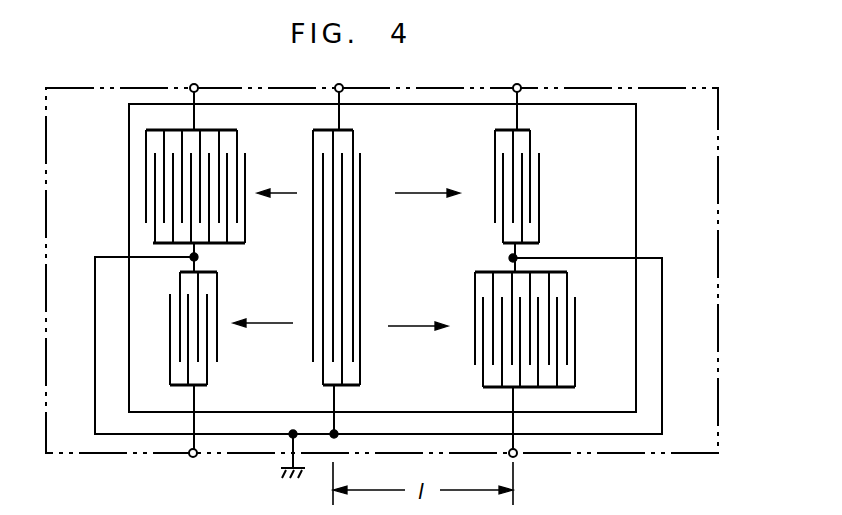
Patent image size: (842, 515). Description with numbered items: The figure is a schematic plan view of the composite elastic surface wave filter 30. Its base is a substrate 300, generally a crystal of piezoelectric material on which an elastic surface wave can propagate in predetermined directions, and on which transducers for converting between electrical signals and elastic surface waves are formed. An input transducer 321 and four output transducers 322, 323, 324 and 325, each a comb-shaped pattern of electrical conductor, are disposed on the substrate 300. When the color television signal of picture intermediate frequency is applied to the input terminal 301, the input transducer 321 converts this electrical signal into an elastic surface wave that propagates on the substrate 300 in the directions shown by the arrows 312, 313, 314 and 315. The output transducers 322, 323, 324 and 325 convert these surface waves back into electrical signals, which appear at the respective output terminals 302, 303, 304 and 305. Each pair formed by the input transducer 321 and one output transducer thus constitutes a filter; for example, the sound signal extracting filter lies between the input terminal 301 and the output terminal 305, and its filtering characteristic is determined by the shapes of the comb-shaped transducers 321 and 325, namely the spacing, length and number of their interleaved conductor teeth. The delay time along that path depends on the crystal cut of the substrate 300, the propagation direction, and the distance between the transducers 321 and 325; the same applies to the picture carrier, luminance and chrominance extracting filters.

The composite elastic surface wave filter 30 is at (718, 165).
The substrate 300 is at (636, 166).
The input terminal 301 is at (342, 86).
The output terminal 302 is at (197, 86).
The output terminal 303 is at (520, 86).
The output terminal 304 is at (516, 456).
The output terminal 305 is at (196, 456).
The arrow 312 is at (297, 193).
The arrow 313 is at (408, 193).
The arrow 314 is at (395, 326).
The arrow 315 is at (285, 323).
The input transducer 321 is at (353, 268).
The output transducer 322 is at (146, 173).
The output transducer 323 is at (540, 175).
The output transducer 324 is at (576, 320).
The output transducer 325 is at (217, 292).